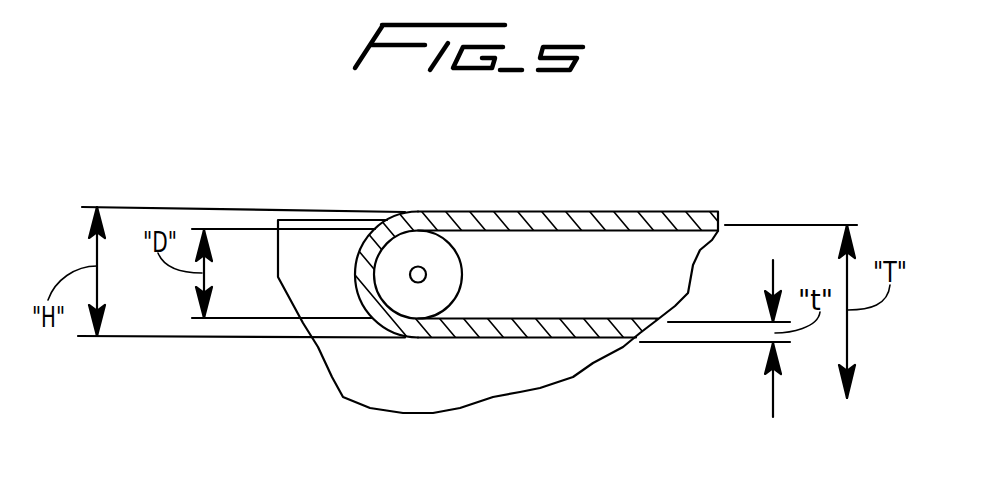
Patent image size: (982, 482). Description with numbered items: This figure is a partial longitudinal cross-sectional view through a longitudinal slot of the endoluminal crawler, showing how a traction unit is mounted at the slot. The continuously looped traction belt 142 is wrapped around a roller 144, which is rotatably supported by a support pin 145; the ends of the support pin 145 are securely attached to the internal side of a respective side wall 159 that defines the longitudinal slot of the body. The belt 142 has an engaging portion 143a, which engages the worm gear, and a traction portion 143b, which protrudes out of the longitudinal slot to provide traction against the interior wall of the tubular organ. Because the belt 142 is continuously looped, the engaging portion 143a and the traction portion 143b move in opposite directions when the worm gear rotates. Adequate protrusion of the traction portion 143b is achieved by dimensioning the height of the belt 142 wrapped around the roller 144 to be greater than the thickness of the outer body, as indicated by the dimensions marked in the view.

The traction belt 142 is at (433, 212).
The engaging portion 143a is at (567, 334).
The traction portion 143b is at (612, 212).
The roller 144 is at (403, 299).
The support pin 145 is at (427, 271).
The side wall 159 is at (490, 377).